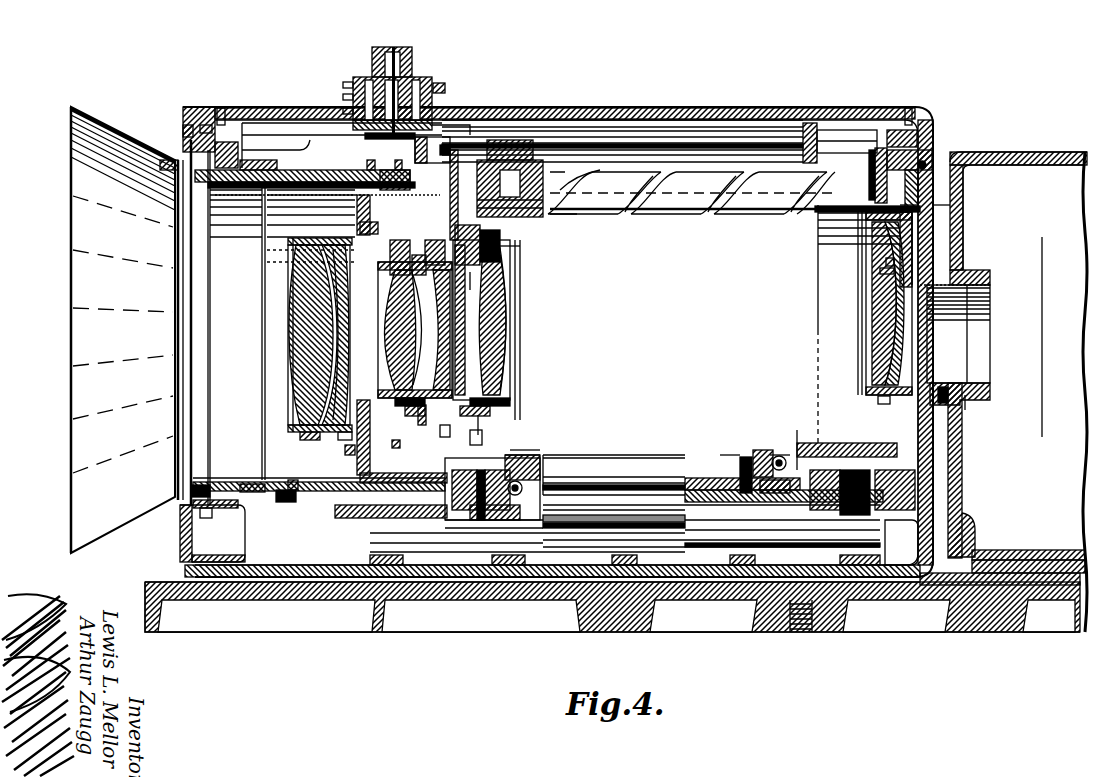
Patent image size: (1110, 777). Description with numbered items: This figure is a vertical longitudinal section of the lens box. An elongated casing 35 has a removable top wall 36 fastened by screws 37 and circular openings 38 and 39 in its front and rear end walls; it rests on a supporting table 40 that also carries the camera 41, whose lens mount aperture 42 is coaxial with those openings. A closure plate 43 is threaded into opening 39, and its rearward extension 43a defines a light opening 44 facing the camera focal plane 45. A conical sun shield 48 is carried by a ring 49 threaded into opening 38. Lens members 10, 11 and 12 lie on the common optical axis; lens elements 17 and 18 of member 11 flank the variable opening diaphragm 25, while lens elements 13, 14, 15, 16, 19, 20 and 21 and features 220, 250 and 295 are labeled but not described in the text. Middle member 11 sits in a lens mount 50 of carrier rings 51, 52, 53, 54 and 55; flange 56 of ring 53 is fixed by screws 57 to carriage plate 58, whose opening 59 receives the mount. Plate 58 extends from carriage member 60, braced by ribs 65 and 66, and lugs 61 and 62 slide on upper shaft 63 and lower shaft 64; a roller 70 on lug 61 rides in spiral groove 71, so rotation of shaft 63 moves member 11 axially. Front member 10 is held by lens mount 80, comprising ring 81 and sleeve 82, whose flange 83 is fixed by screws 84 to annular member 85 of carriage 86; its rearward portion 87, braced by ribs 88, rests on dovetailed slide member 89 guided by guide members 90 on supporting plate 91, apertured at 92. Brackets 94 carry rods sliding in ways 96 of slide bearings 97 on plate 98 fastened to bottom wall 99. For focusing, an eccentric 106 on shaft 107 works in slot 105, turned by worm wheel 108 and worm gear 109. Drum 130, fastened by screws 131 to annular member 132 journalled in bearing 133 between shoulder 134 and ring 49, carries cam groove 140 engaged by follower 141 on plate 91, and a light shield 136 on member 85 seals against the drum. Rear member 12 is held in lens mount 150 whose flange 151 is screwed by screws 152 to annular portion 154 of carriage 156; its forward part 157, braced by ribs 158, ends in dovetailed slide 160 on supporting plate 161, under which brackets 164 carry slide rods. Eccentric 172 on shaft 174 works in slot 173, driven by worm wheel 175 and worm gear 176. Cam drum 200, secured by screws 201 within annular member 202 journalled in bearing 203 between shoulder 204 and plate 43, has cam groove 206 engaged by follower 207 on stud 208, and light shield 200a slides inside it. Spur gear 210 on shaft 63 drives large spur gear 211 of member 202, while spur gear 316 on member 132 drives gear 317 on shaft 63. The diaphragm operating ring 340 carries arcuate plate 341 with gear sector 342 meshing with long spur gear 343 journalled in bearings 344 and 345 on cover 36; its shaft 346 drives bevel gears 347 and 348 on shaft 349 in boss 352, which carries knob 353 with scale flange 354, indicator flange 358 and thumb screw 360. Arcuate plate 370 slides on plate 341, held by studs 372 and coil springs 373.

The front lens member 10 is at (285, 358).
The middle lens member 11 is at (488, 338).
The rear lens member 12 is at (862, 316).
The lens element / section line 13 is at (290, 322).
The lens element 14 is at (300, 335).
The lens element 15 is at (330, 348).
The lens element 16 is at (392, 350).
The lens element 17 is at (435, 355).
The lens element 18 is at (496, 380).
The lens element 19 is at (505, 366).
The rear lens element 20 is at (878, 340).
The rear lens element 21 is at (898, 340).
The variable opening diaphragm 25 is at (478, 290).
The casing 35 is at (945, 125).
The removable top wall 36 is at (868, 110).
The screws 37 is at (224, 112).
The front circular opening 38 is at (207, 125).
The rear circular opening 39 is at (940, 155).
The supporting table 40 is at (865, 600).
The camera 41 is at (940, 585).
The lens mount aperture 42 is at (968, 392).
The closure plate 43 is at (942, 168).
The rearward extension 43a is at (955, 400).
The light opening 44 is at (965, 358).
The focal plane 45 is at (1043, 255).
The conical sun shield 48 is at (71, 131).
The ring 49 is at (186, 128).
The lens mount 50 is at (500, 260).
The lens carrier ring 51 is at (425, 395).
The lens carrier ring 52 is at (430, 405).
The lens carrier ring 53 is at (422, 415).
The lens carrier ring 54 is at (500, 415).
The lens carrier ring 55 is at (508, 400).
The external annular flange 56 is at (447, 430).
The screws 57 is at (430, 264).
The carriage plate 58 is at (424, 250).
The opening 59 is at (410, 310).
The carriage member 60 is at (510, 330).
The upper perforated lug 61 is at (270, 150).
The lower perforated lug 62 is at (520, 470).
The upper shaft 63 is at (668, 215).
The lower shaft 64 is at (650, 470).
The horizontal rib 65 is at (500, 252).
The horizontal rib 66 is at (510, 450).
The roller 70 is at (545, 140).
The spiral groove 71 is at (582, 170).
The lens mount 80 is at (318, 438).
The mounting ring 81 is at (340, 438).
The sleeve 82 is at (312, 430).
The external annular flange 83 is at (352, 452).
The screws 84 is at (360, 228).
The annular member 85 is at (370, 233).
The lens carriage 86 is at (520, 455).
The carriage portion 87 is at (478, 440).
The ribs 88 is at (480, 425).
The dove-tailed slide member 89 is at (360, 500).
The guide members 90 is at (235, 545).
The supporting plate 91 is at (368, 528).
The aperture 92 is at (418, 545).
The brackets 94 is at (397, 545).
The ways 96 is at (598, 515).
The slide bearing members 97 is at (450, 545).
The supporting plate 98 is at (550, 555).
The bottom wall 99 is at (535, 555).
The transverse slot 105 is at (458, 550).
The eccentric 106 is at (465, 550).
The shaft 107 is at (530, 502).
The worm wheel 108 is at (430, 490).
The worm gear 109 is at (530, 478).
The cam drum 130 is at (281, 146).
The screws 131 is at (253, 486).
The annular member 132 is at (220, 485).
The bearing 133 is at (160, 165).
The shoulder 134 is at (231, 515).
The light shield 136 is at (290, 156).
The cam groove 140 is at (364, 136).
The cam follower member 141 is at (270, 482).
The lens mount 150 is at (878, 282).
The external annular flange 151 is at (885, 272).
The screws 152 is at (880, 400).
The annular portion 154 is at (888, 262).
The lens carriage member 156 is at (740, 450).
The carriage part 157 is at (797, 430).
The ribs 158 is at (770, 455).
The dovetailed slide member 160 is at (708, 480).
The supporting plate 161 is at (812, 508).
The brackets 164 is at (695, 545).
The eccentric 172 is at (753, 508).
The transverse slot 173 is at (772, 508).
The shaft 174 is at (773, 462).
The worm wheel 175 is at (748, 455).
The worm gear 176 is at (760, 450).
The cam drum 200 is at (820, 236).
The light excluding shield 200a is at (935, 238).
The screws 201 is at (940, 212).
The annular member 202 is at (940, 205).
The bearing 203 is at (945, 162).
The shoulder 204 is at (876, 144).
The cam groove 206 is at (842, 175).
The follower member 207 is at (850, 470).
The stud 208 is at (845, 475).
The spur gear 210 is at (878, 150).
The large spur gear 211 is at (880, 178).
The chamber 220 is at (688, 330).
The gear 250 is at (500, 268).
The rod 295 is at (295, 170).
The spur gear 316 is at (247, 150).
The gear 317 is at (205, 148).
The diaphragm operating ring 340 is at (475, 272).
The arcuate plate 341 is at (450, 245).
The gear sector portion 342 is at (452, 145).
The long spur gear 343 is at (668, 110).
The bearing 344 is at (832, 108).
The bearing 345 is at (470, 125).
The shaft 346 is at (455, 135).
The bevel gear 347 is at (465, 118).
The bevel gear 348 is at (348, 112).
The shaft 349 is at (348, 96).
The boss 352 is at (440, 115).
The manual operating knob 353 is at (412, 47).
The flange portion 354 is at (414, 60).
The indicator flange 358 is at (348, 84).
The thumb screw 360 is at (445, 84).
The arcuate plate 370 is at (500, 242).
The studs 372 is at (500, 257).
The coil springs 373 is at (500, 263).